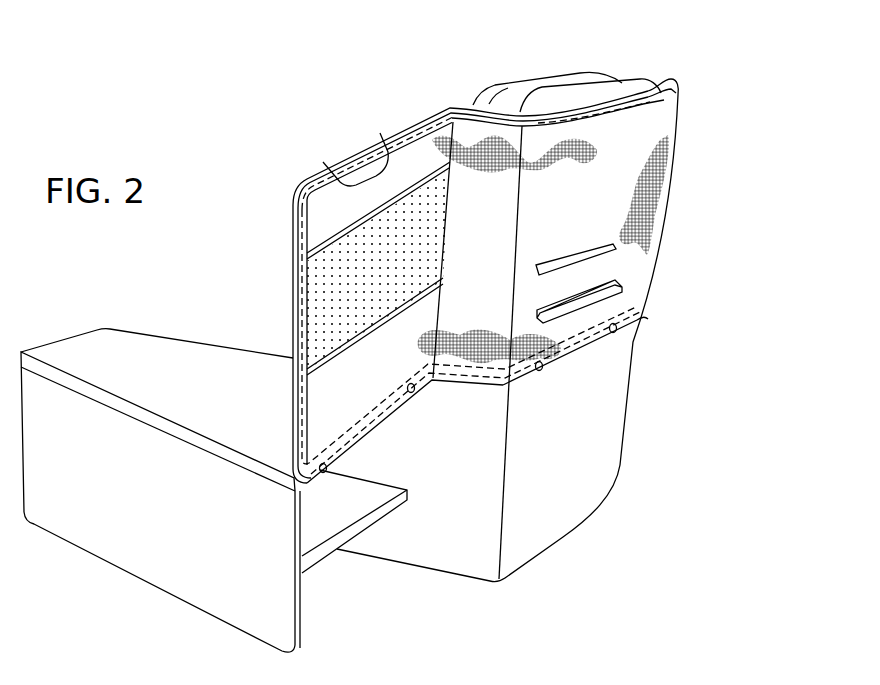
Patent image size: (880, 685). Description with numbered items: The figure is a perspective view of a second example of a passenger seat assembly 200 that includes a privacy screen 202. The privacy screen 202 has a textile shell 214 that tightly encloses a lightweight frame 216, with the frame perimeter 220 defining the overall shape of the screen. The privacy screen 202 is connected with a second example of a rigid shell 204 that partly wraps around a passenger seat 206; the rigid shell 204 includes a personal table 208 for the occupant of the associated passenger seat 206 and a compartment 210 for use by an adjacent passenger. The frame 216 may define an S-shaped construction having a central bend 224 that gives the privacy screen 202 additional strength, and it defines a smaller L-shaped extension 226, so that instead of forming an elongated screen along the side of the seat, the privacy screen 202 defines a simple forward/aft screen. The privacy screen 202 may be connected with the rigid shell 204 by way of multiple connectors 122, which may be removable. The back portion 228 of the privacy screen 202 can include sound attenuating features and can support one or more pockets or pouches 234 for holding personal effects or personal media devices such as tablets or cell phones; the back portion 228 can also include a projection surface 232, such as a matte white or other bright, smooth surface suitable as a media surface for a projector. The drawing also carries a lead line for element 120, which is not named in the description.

The passenger seat assembly 200 is at (358, 105).
The privacy screen 202 is at (680, 219).
The rigid shell 204 is at (664, 413).
The passenger seat 206 is at (469, 65).
The personal table 208 is at (227, 353).
The compartment 210 is at (342, 515).
The lower frame member 120 is at (619, 357).
The connectors 122 is at (541, 371).
The textile shell 214 is at (675, 152).
The frame 216 is at (358, 157).
The frame perimeter 220 is at (284, 160).
The central bend 224 is at (451, 401).
The L-shaped extension 226 is at (689, 62).
The back portion 228 is at (598, 208).
The projection surface 232 is at (323, 267).
The pockets or pouches 234 is at (622, 287).